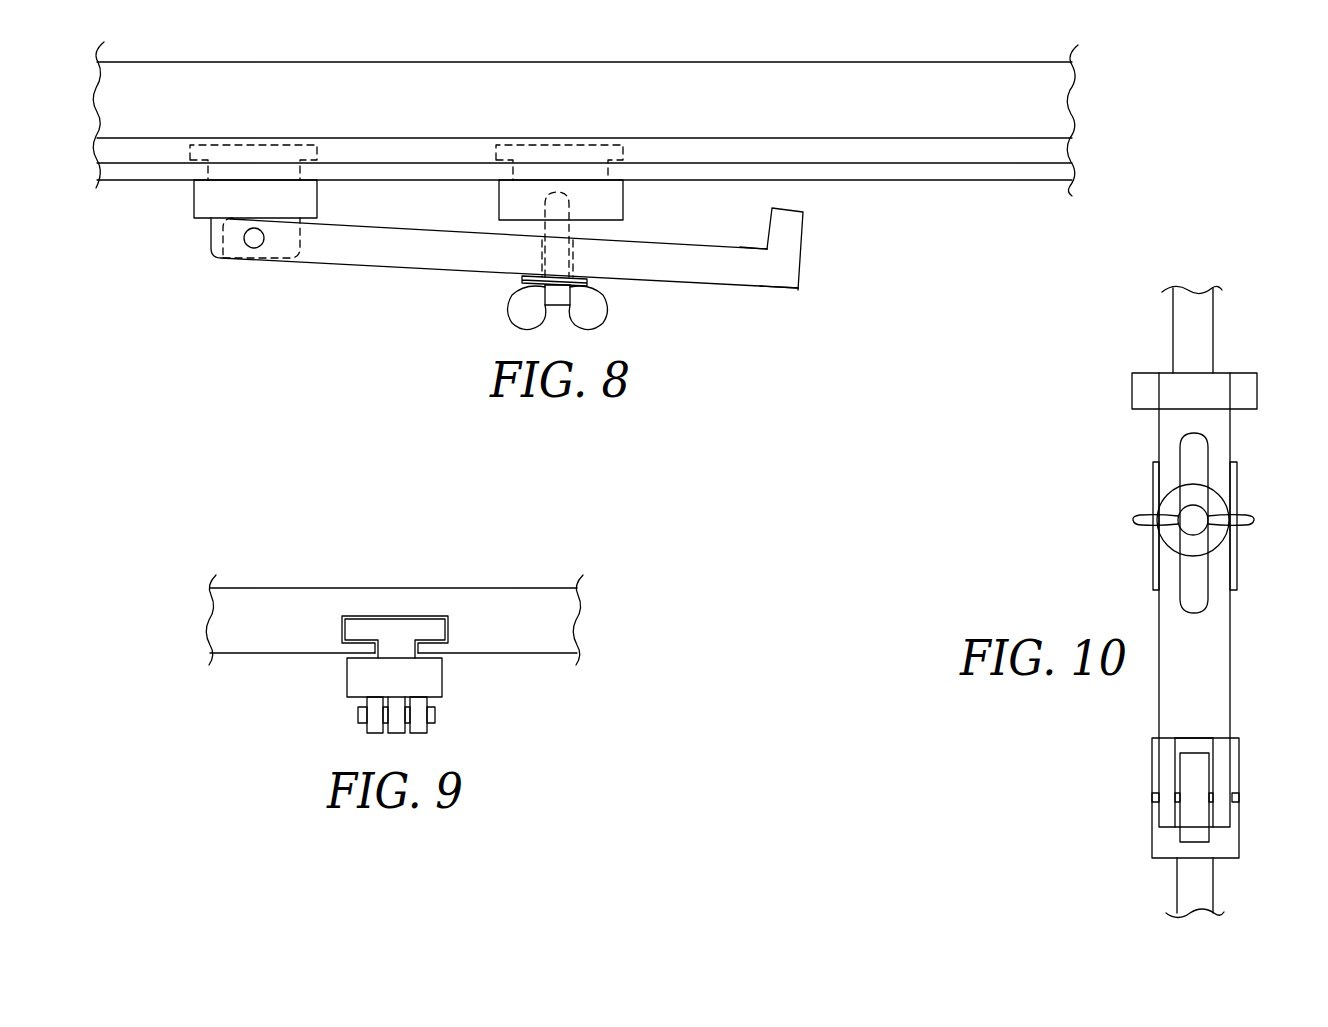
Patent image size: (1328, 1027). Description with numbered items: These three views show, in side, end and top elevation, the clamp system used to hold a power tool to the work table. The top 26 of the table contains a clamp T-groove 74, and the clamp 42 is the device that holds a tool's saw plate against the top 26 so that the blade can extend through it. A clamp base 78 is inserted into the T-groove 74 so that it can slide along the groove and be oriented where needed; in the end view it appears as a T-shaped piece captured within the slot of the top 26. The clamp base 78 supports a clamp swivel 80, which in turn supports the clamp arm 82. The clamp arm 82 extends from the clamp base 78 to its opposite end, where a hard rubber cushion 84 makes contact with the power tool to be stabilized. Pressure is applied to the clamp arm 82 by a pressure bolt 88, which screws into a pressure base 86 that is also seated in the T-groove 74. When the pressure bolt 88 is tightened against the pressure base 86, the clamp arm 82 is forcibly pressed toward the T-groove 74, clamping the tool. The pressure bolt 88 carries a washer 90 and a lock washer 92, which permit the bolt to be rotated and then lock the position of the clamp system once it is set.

In FIG. 8, the top 26 is at (987, 62).
In FIG. 8, the clamp 42 is at (767, 285).
In FIG. 8, the clamp T-groove 74 is at (1058, 158).
In FIG. 9, the clamp T-groove 74 is at (450, 630).
In FIG. 10, the clamp T-groove 74 is at (1203, 327).
In FIG. 8, the clamp base 78 is at (193, 213).
In FIG. 9, the clamp base 78 is at (442, 678).
In FIG. 10, the clamp base 78 is at (1239, 746).
In FIG. 8, the clamp swivel 80 is at (254, 244).
In FIG. 9, the clamp swivel 80 is at (435, 714).
In FIG. 10, the clamp swivel 80 is at (1239, 797).
In FIG. 8, the clamp arm 82 is at (325, 250).
In FIG. 9, the clamp arm 82 is at (370, 733).
In FIG. 10, the clamp arm 82 is at (1232, 700).
In FIG. 8, the hard rubber cushion 84 is at (805, 237).
In FIG. 10, the hard rubber cushion 84 is at (1252, 387).
In FIG. 8, the pressure base 86 is at (623, 192).
In FIG. 10, the pressure base 86 is at (1237, 470).
In FIG. 8, the pressure bolt 88 is at (608, 298).
In FIG. 10, the pressure bolt 88 is at (1255, 520).
In FIG. 8, the washer 90 is at (530, 288).
In FIG. 10, the washer 90 is at (1213, 502).
In FIG. 8, the lock washer 92 is at (520, 280).